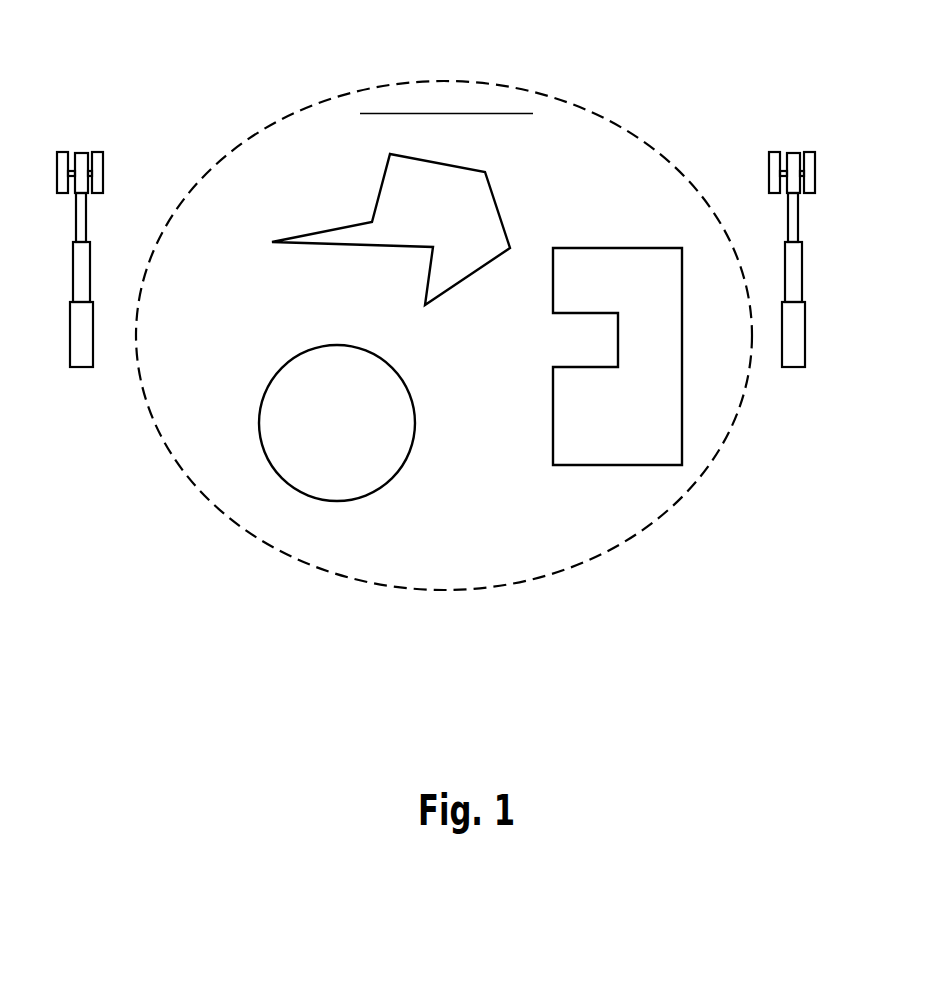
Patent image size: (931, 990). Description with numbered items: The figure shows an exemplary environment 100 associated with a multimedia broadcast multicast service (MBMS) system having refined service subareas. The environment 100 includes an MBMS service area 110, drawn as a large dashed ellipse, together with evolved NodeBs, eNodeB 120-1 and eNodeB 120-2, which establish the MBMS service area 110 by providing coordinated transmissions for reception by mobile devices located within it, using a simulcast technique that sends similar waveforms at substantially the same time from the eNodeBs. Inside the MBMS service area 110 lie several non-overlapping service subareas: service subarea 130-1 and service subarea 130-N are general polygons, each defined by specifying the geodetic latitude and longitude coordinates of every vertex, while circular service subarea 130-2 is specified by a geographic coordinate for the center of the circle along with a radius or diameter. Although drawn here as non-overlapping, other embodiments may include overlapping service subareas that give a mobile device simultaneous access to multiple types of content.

The environment 100 is at (173, 20).
The MBMS service area 110 is at (399, 593).
The eNodeB 120-1 is at (77, 142).
The eNodeB 120-2 is at (812, 123).
The service subarea 130-1 is at (498, 187).
The circular service subarea 130-2 is at (258, 408).
The service subarea 130-N is at (612, 468).